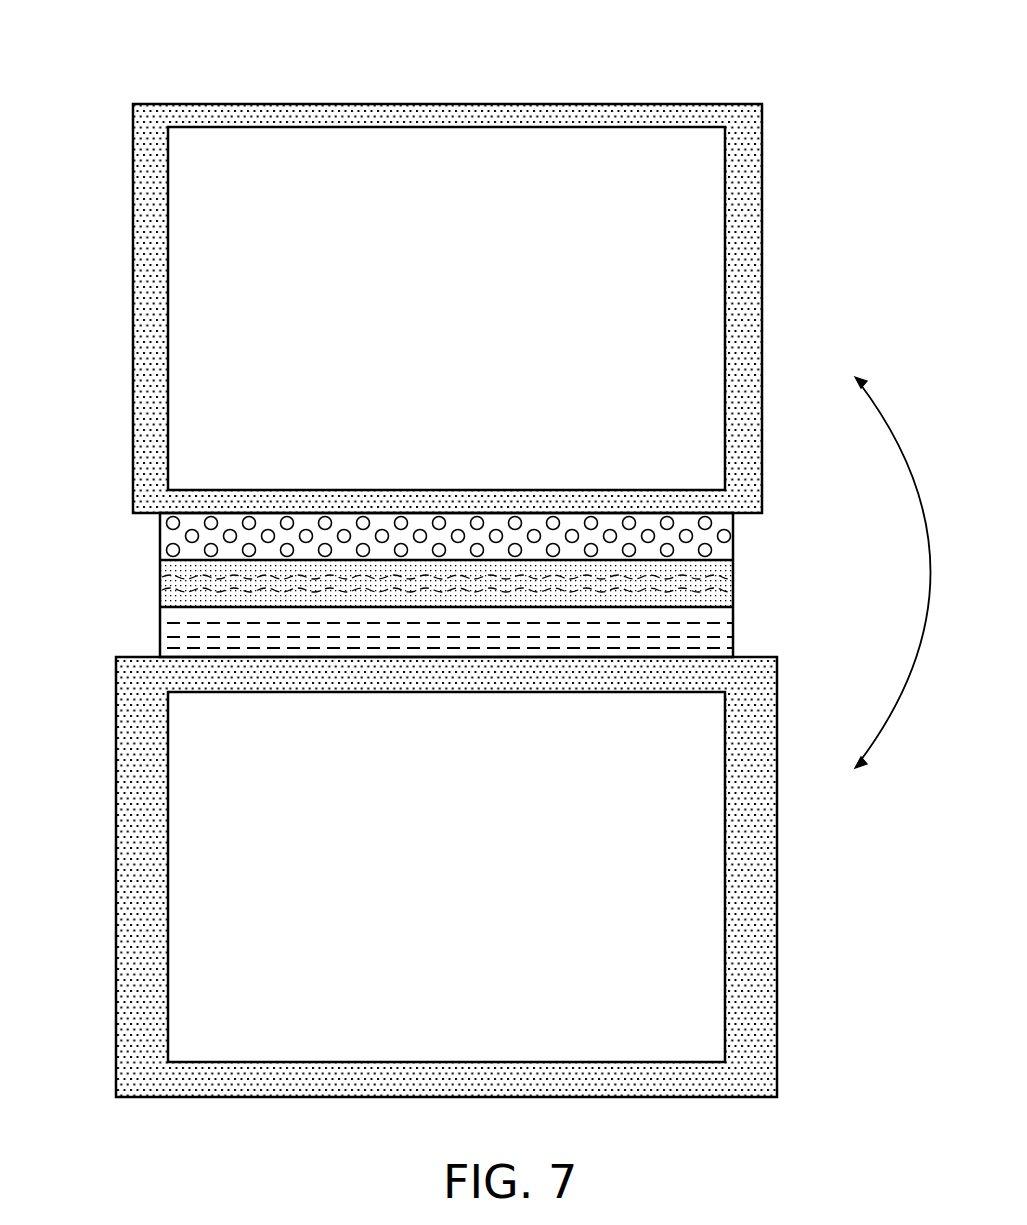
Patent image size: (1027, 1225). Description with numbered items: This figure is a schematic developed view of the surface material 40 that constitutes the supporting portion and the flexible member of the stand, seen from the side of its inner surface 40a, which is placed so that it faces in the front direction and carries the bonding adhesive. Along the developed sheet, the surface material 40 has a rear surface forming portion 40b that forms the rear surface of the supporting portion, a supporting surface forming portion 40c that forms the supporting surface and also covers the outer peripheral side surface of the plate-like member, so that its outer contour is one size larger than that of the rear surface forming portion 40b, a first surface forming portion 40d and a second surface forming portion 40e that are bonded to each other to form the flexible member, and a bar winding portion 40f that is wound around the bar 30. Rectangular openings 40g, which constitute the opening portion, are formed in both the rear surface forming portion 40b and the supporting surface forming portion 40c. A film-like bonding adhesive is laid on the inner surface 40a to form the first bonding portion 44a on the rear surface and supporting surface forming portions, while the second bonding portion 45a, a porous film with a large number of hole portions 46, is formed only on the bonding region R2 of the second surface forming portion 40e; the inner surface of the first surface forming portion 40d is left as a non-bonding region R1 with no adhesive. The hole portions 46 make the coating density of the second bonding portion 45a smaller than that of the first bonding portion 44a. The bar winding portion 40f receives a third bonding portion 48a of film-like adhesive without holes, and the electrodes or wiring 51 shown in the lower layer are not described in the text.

The surface material 40 is at (123, 36).
The inner surface 40a is at (152, 226).
The rear surface forming portion 40b is at (764, 273).
The supporting surface forming portion 40c is at (766, 938).
The first surface forming portion 40d is at (737, 628).
The second surface forming portion 40e is at (737, 533).
The bar winding portion 40f is at (737, 583).
The rectangular openings 40g is at (722, 228).
The first bonding portion 44a is at (152, 298).
The second bonding portion 45a is at (386, 520).
The hole portions 46 is at (193, 528).
The third bonding portion 48a is at (420, 596).
The electrodes / wiring 51 is at (156, 619).
The bar 30 is at (158, 583).
The non-bonding region R1 is at (571, 661).
The bonding region R2 is at (495, 508).